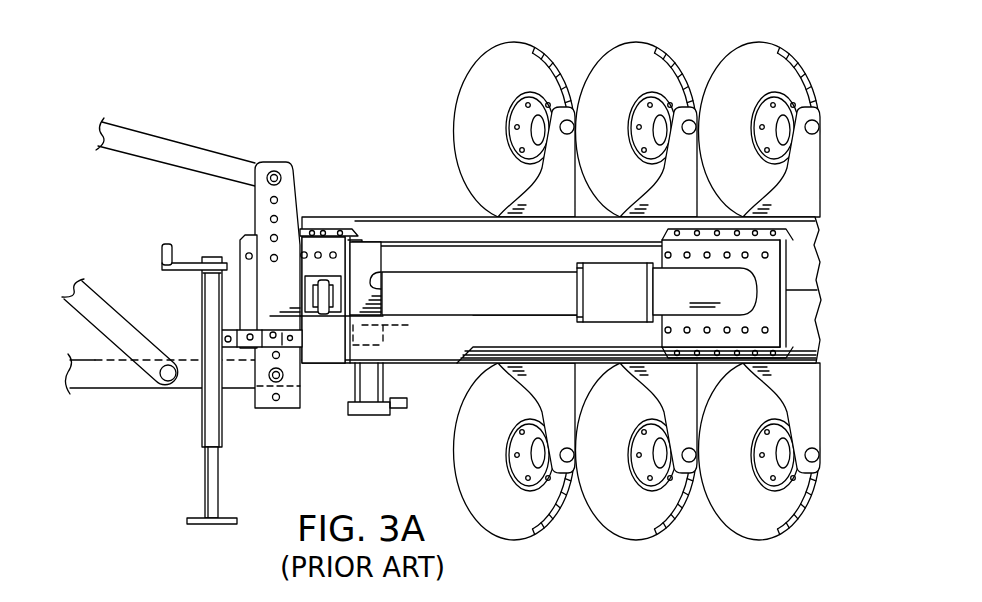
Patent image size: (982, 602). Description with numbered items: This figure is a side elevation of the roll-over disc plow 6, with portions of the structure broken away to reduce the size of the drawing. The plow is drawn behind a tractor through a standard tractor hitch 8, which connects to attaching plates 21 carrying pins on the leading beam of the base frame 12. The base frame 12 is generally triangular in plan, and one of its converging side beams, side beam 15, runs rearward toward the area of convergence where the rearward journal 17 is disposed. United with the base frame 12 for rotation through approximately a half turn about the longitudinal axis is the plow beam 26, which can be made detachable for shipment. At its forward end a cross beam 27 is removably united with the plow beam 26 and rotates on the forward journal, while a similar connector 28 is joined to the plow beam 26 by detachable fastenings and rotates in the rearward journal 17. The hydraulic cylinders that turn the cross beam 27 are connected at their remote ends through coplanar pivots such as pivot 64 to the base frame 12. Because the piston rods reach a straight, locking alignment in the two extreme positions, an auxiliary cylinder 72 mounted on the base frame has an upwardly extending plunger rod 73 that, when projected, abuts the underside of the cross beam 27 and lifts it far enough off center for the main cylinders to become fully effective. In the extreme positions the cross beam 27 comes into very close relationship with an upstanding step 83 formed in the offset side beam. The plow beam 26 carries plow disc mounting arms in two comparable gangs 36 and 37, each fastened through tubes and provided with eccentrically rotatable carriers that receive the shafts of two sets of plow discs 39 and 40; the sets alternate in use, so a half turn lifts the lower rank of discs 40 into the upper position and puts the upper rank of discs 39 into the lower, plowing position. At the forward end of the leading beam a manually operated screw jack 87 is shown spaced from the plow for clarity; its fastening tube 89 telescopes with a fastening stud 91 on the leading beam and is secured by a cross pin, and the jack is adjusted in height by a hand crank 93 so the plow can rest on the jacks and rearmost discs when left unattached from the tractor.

The disc plow 6 is at (611, 116).
The tractor hitch 8 is at (177, 150).
The base frame 12 is at (490, 322).
The side beam 15 is at (503, 282).
The rearward journal 17 is at (592, 322).
The attaching plate 21 is at (289, 200).
The plow beam 26 is at (452, 218).
The cross beam 27 is at (380, 268).
The connector 28 is at (720, 299).
The plow disc mounting arms 36 is at (532, 194).
The plow disc mounting arms 37 is at (527, 388).
The plow discs 39 is at (459, 108).
The plow discs 40 is at (617, 523).
The pivot 64 is at (326, 278).
The auxiliary cylinder 72 is at (381, 380).
The plunger rod 73 is at (392, 322).
The upstanding step 83 is at (366, 280).
The screw jack 87 is at (200, 421).
The fastening tube 89 is at (226, 329).
The fastening stud 91 is at (284, 402).
The hand crank 93 is at (166, 243).